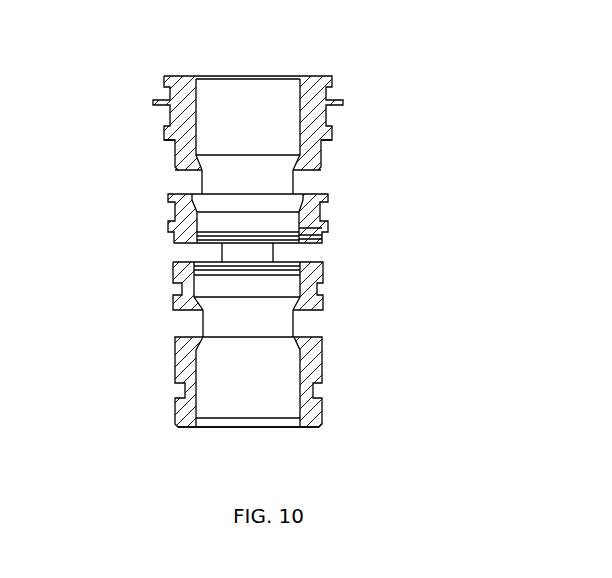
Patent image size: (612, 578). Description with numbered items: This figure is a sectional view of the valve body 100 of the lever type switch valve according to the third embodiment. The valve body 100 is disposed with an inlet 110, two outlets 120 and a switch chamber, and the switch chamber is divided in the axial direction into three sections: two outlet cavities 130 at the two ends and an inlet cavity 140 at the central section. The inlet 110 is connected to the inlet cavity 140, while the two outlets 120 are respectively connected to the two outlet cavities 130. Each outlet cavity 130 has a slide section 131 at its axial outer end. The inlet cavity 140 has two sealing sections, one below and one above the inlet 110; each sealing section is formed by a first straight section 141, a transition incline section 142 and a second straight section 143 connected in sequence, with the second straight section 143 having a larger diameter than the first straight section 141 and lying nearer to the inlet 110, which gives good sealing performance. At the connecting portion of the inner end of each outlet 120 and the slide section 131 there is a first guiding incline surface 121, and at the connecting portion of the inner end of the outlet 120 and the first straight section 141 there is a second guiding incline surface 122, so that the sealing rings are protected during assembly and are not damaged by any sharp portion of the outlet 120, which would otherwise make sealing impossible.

The valve body 100 is at (322, 123).
The inlet 110 is at (312, 253).
The outlet 120 is at (310, 180).
The first guiding incline surface 121 is at (178, 148).
The second guiding incline surface 122 is at (168, 202).
The outlet cavity 130 is at (195, 175).
The slide section 131 is at (178, 112).
The inlet cavity 140 is at (202, 250).
The first straight section 141 is at (328, 227).
The transition incline section 142 is at (326, 235).
The second straight section 143 is at (326, 238).